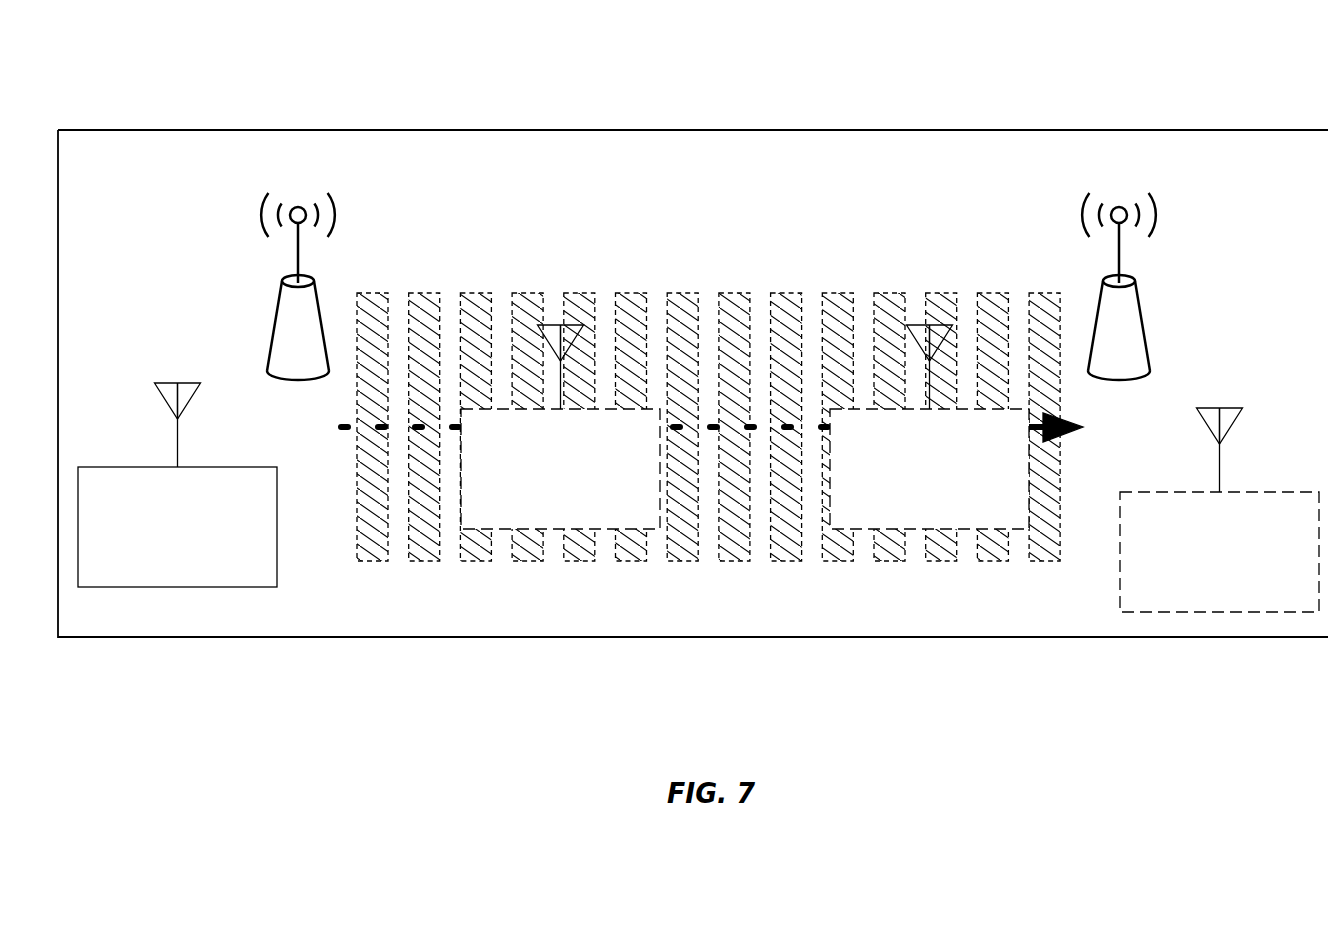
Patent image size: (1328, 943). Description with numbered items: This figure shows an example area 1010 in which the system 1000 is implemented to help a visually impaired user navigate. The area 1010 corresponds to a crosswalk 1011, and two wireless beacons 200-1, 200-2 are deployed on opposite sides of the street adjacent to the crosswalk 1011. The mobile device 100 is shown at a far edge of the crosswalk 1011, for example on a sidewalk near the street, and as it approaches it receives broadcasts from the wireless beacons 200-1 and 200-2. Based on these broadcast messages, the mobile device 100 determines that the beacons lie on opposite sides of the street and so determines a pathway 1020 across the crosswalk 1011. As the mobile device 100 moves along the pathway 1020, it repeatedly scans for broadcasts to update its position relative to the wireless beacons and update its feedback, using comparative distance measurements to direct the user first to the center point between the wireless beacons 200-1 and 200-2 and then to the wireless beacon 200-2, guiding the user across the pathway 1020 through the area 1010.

The system 1000 is at (213, 58).
The area 1010 is at (456, 200).
The crosswalk 1011 is at (403, 286).
The pathway 1020 is at (752, 427).
The wireless beacon 200-1 is at (153, 314).
The wireless beacon 200-2 is at (1215, 304).
The mobile device 100 is at (698, 468).